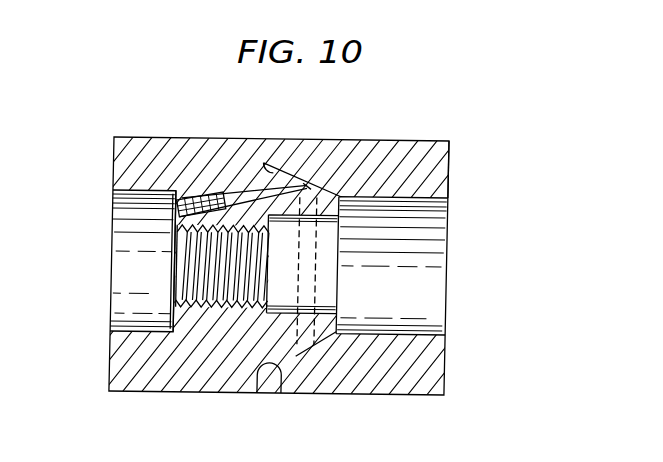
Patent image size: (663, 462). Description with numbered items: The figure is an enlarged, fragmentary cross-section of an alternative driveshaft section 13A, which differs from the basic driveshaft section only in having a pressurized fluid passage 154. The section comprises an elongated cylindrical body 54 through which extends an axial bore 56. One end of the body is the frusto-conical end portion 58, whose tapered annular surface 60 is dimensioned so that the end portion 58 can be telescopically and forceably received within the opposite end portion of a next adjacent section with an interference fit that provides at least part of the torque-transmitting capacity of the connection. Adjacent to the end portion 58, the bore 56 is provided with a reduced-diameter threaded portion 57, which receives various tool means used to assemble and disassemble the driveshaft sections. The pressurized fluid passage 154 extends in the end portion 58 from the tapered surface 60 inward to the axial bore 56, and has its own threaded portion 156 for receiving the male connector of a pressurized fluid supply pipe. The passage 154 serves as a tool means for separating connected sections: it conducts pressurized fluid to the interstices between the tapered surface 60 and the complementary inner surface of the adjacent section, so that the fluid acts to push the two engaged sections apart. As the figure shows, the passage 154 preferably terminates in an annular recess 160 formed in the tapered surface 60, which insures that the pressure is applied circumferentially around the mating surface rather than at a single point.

The alternative driveshaft section 13A is at (127, 130).
The cylindrical body 54 is at (442, 170).
The axial bore 56 is at (112, 296).
The threaded portion 57 is at (185, 268).
The end portion 58 is at (283, 350).
The tapered annular surface 60 is at (303, 362).
The pressurized fluid passage 154 is at (233, 197).
The threaded portion 156 is at (183, 197).
The annular recess 160 is at (307, 184).